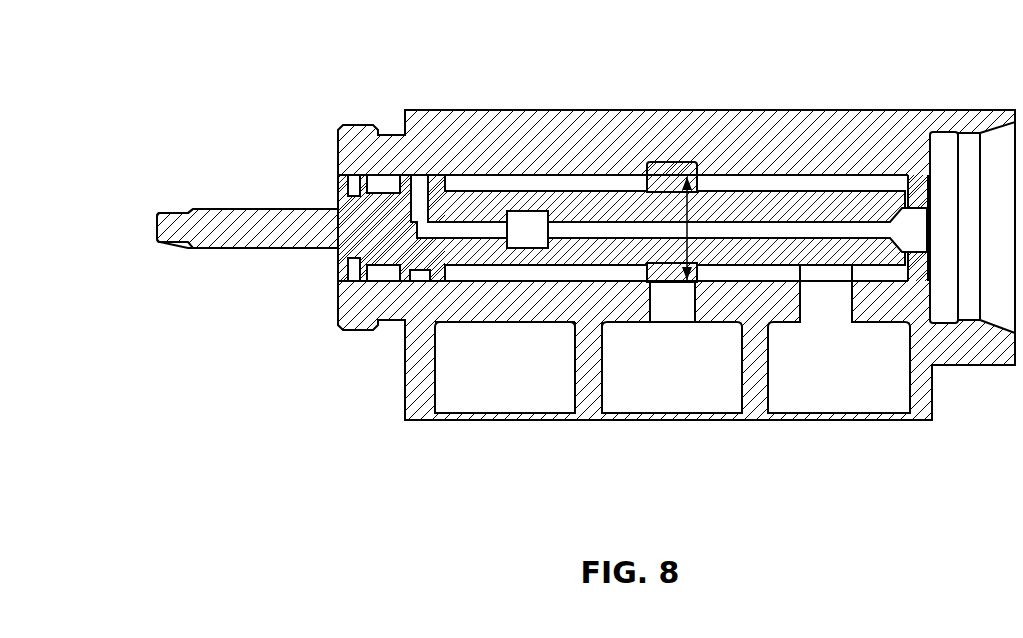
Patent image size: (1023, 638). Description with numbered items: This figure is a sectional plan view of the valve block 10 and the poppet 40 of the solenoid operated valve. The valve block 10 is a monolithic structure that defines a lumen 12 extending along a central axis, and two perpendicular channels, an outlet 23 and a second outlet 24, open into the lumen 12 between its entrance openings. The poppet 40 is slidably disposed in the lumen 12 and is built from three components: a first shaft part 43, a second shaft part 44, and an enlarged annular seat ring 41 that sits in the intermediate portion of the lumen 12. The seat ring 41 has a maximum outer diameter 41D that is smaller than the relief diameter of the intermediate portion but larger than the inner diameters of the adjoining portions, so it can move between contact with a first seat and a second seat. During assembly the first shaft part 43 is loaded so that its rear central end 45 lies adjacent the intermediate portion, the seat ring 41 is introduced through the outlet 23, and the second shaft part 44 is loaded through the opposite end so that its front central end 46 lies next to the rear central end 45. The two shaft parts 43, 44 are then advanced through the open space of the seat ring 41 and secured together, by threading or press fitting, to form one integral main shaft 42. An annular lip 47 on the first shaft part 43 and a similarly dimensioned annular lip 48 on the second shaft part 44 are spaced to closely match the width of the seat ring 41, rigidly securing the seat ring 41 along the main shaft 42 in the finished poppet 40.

The valve block 10 is at (965, 345).
The lumen 12 is at (505, 270).
The outlet 23 is at (725, 428).
The second outlet 24 is at (888, 428).
The poppet 40 is at (305, 233).
The seat ring 41 is at (667, 270).
The maximum outer diameter 41D is at (700, 216).
The main shaft 42 is at (802, 248).
The first shaft part 43 is at (210, 239).
The second shaft part 44 is at (832, 207).
The rear central end 45 is at (613, 195).
The front central end 46 is at (725, 256).
The annular lip 47 is at (643, 265).
The annular lip 48 is at (703, 190).